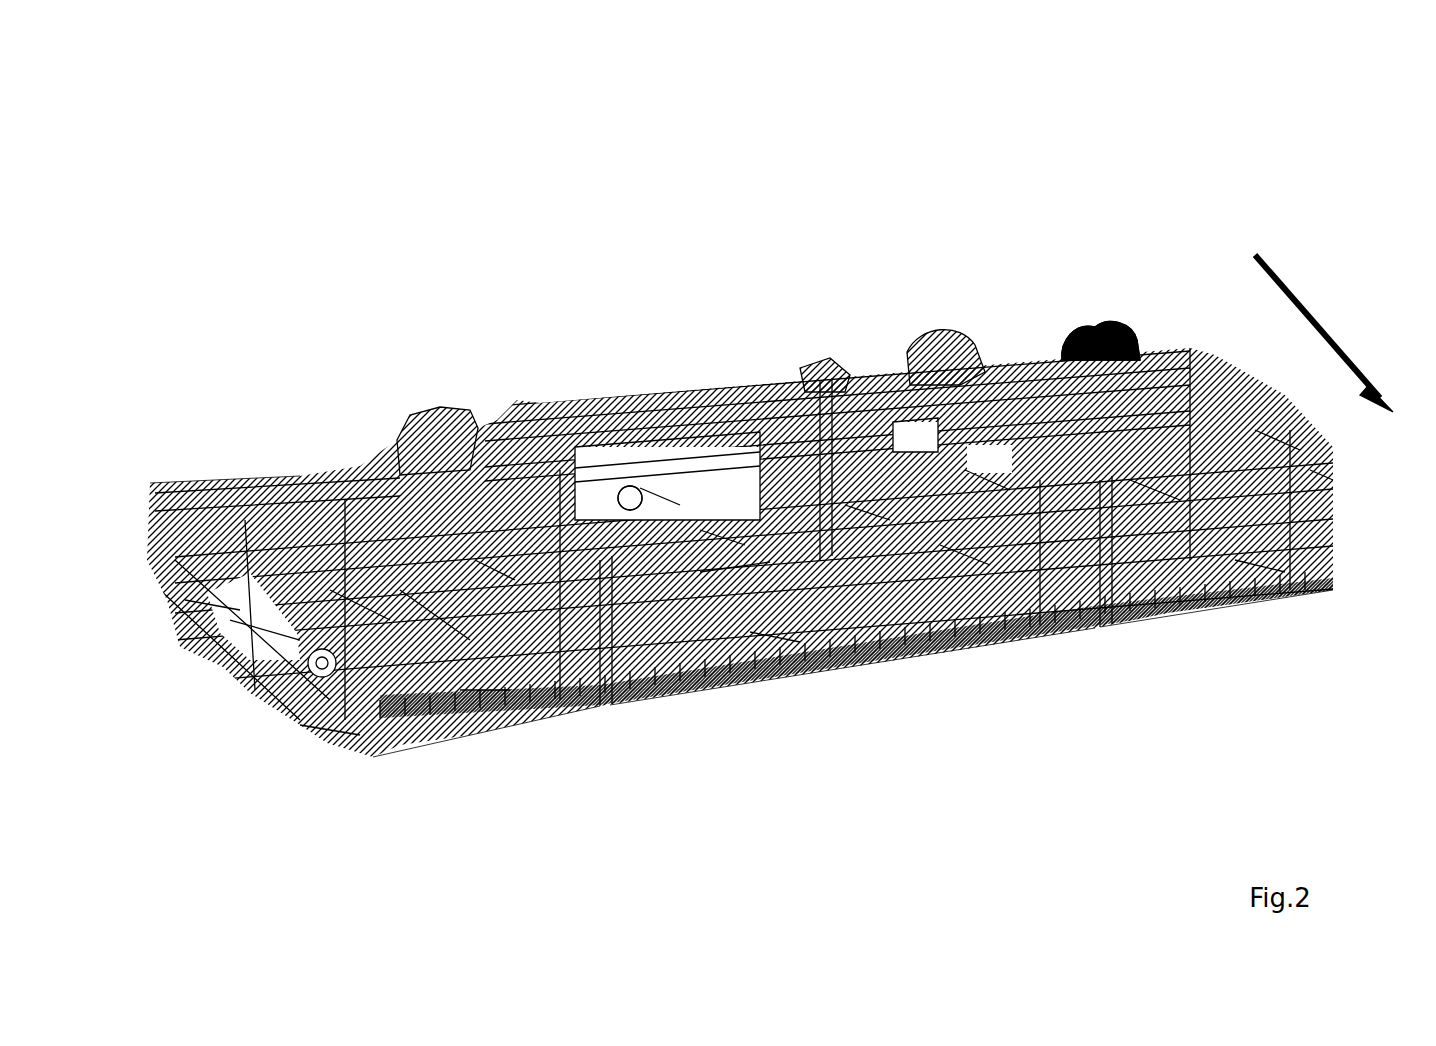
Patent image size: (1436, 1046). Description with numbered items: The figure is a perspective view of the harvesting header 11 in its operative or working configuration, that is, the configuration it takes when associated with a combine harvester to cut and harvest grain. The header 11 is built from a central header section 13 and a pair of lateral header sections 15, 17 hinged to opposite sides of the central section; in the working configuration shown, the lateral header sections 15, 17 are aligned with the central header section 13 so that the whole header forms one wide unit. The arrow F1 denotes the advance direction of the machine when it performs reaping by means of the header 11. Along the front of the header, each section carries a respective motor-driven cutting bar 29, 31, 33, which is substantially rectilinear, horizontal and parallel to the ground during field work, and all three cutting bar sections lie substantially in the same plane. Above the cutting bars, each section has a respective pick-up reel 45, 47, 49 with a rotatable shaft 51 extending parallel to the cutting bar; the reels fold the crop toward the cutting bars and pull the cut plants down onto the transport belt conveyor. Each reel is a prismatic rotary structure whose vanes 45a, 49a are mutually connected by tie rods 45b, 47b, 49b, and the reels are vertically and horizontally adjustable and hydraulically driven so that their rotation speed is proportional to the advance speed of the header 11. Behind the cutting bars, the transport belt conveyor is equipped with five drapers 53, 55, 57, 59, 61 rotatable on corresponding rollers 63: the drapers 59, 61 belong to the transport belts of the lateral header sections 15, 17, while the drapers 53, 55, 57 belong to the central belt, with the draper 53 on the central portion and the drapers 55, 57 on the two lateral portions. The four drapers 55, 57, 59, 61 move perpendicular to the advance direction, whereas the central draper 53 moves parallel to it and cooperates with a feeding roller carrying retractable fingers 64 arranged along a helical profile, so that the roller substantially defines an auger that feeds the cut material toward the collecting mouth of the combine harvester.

The header 11 is at (246, 334).
The central header section 13 is at (1092, 650).
The lateral header section 15 is at (608, 733).
The lateral header section 17 is at (1097, 650).
The cutting bar 29 is at (730, 566).
The cutting bar 31 is at (483, 692).
The cutting bar 33 is at (1255, 567).
The pick-up reel 45 is at (658, 493).
The vanes 45a is at (767, 640).
The tie rods 45b is at (987, 480).
The pick-up reel 47 is at (438, 616).
The tie rods 47b is at (360, 610).
The pick-up reel 49 is at (1157, 490).
The vanes 49a is at (327, 733).
The tie rods 49b is at (1275, 433).
The rotatable shaft 51 is at (963, 557).
The draper 53 is at (718, 540).
The draper 55 is at (493, 570).
The draper 57 is at (865, 513).
The draper 59 is at (263, 627).
The draper 61 is at (1195, 508).
The rollers 63 is at (208, 602).
The retractable fingers 64 is at (652, 482).
The advance direction F1 is at (1275, 270).